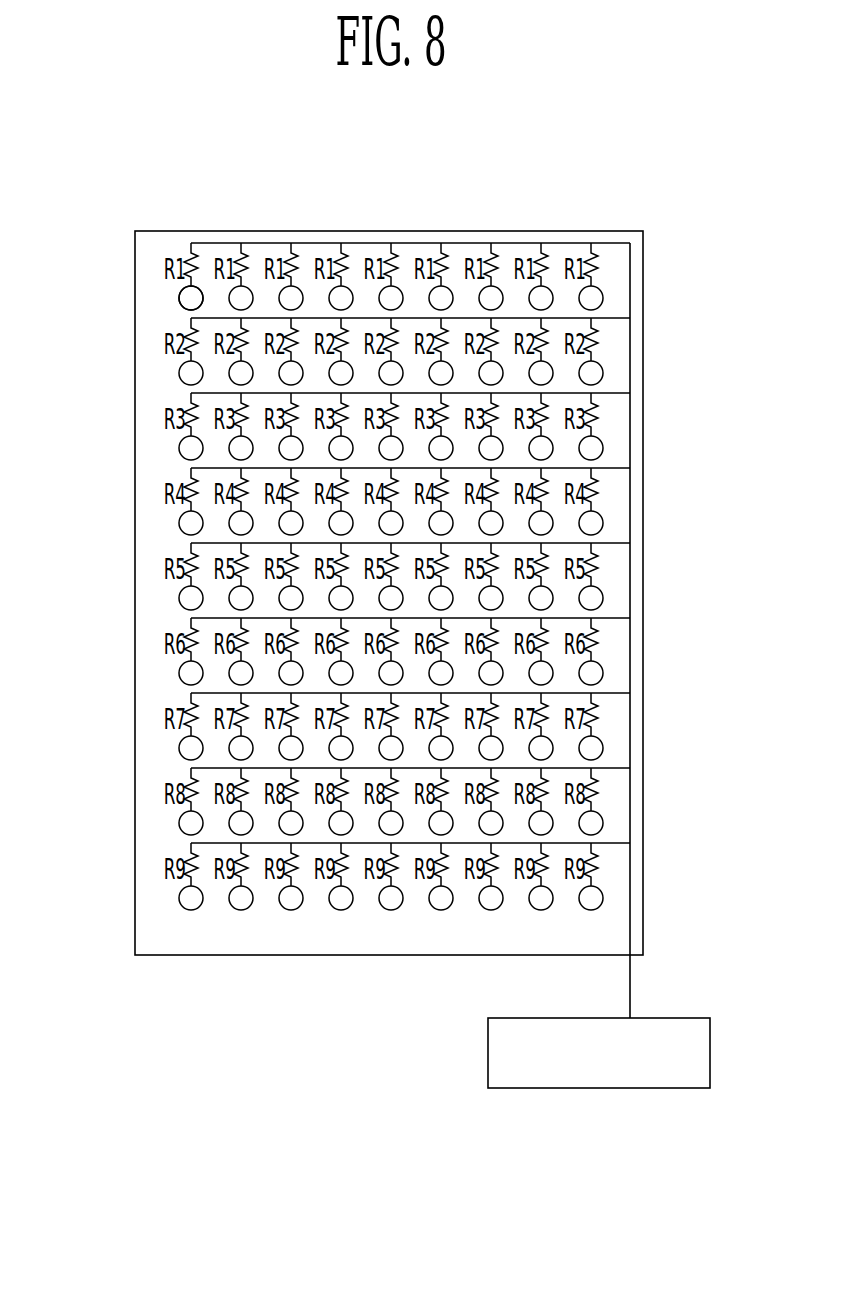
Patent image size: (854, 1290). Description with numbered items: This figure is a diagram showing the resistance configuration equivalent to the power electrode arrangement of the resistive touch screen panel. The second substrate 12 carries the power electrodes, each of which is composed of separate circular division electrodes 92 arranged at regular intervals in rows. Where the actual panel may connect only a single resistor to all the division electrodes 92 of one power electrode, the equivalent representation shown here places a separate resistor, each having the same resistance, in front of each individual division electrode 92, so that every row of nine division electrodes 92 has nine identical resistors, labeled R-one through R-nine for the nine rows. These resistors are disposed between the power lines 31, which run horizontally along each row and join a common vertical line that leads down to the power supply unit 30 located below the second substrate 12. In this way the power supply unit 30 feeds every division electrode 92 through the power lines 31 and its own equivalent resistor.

The second substrate 12 is at (643, 933).
The power lines 31 is at (311, 243).
The division electrodes 92 is at (180, 293).
The power supply unit 30 is at (597, 1088).